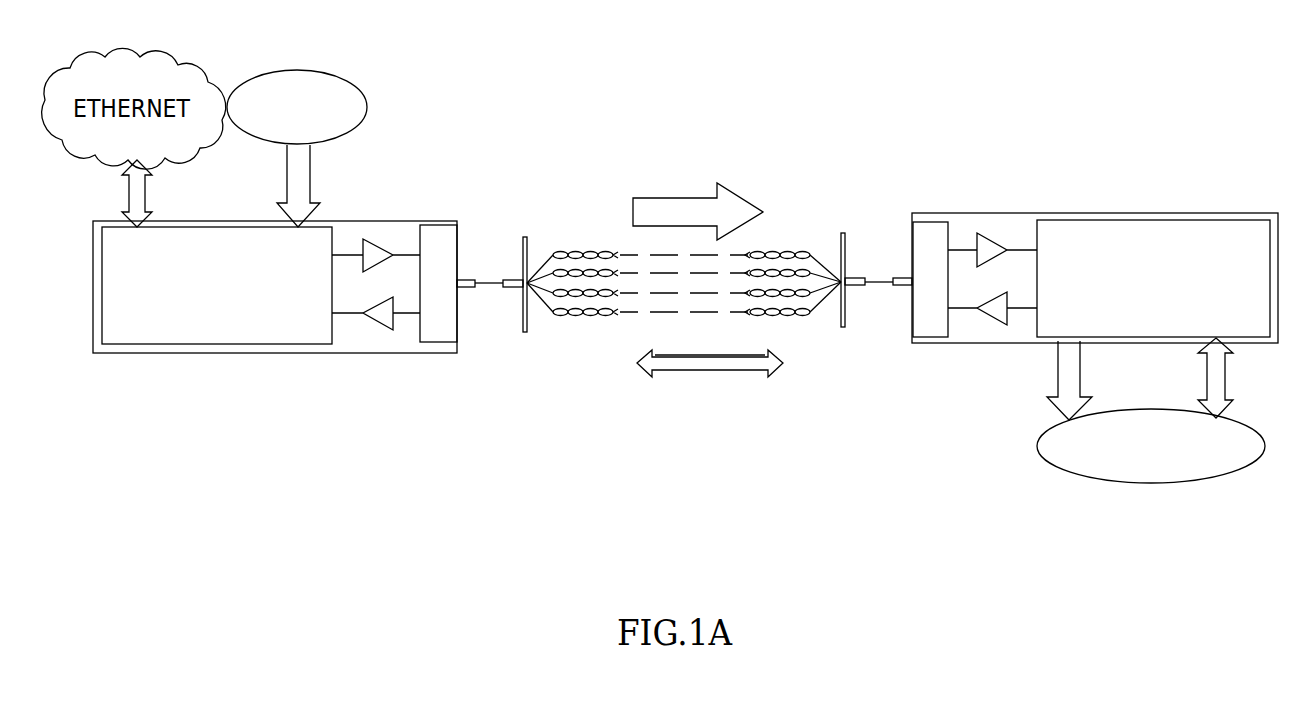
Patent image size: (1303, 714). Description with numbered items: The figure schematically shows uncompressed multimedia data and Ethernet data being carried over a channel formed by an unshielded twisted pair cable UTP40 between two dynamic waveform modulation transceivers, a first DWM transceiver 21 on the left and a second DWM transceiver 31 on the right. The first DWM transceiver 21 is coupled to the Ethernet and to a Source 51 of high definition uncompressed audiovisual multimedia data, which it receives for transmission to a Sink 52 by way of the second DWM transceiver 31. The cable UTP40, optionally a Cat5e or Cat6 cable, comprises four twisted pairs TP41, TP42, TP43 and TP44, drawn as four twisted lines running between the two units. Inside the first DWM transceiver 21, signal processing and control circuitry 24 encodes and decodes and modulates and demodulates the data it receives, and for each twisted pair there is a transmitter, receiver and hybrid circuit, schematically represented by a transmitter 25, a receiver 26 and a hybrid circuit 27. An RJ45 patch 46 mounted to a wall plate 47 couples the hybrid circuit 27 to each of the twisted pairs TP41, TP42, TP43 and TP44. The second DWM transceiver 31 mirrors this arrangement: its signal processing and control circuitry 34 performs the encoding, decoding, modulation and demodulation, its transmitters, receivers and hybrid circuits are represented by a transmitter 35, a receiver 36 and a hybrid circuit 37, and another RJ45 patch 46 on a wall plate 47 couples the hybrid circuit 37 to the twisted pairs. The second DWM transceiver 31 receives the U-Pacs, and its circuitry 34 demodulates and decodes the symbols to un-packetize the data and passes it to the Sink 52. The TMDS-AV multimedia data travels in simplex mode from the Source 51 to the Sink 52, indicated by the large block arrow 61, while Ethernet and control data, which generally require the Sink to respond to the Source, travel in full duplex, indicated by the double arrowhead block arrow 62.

The DWM transceiver 21 is at (227, 359).
The signal processing and control circuitry 24 is at (229, 294).
The transmitter 25 is at (378, 240).
The receiver 26 is at (378, 332).
The hybrid circuit 27 is at (438, 236).
The RJ45 patch 46 is at (483, 281).
The wall plate 47 is at (529, 250).
The twisted pair TP41 is at (559, 317).
The twisted pair TP42 is at (574, 296).
The twisted pair TP43 is at (588, 276).
The twisted pair TP44 is at (591, 258).
The unshielded twisted pair cable UTP40 is at (644, 388).
The large block arrow 61 is at (681, 197).
The double arrowhead block arrow 62 is at (750, 372).
The DWM transceiver 31 is at (1000, 349).
The signal processing and control circuitry 34 is at (1166, 289).
The transmitter 35 is at (986, 319).
The receiver 36 is at (988, 240).
The hybrid circuit 37 is at (927, 230).
The Source 51 is at (367, 107).
The Sink 52 is at (1187, 483).